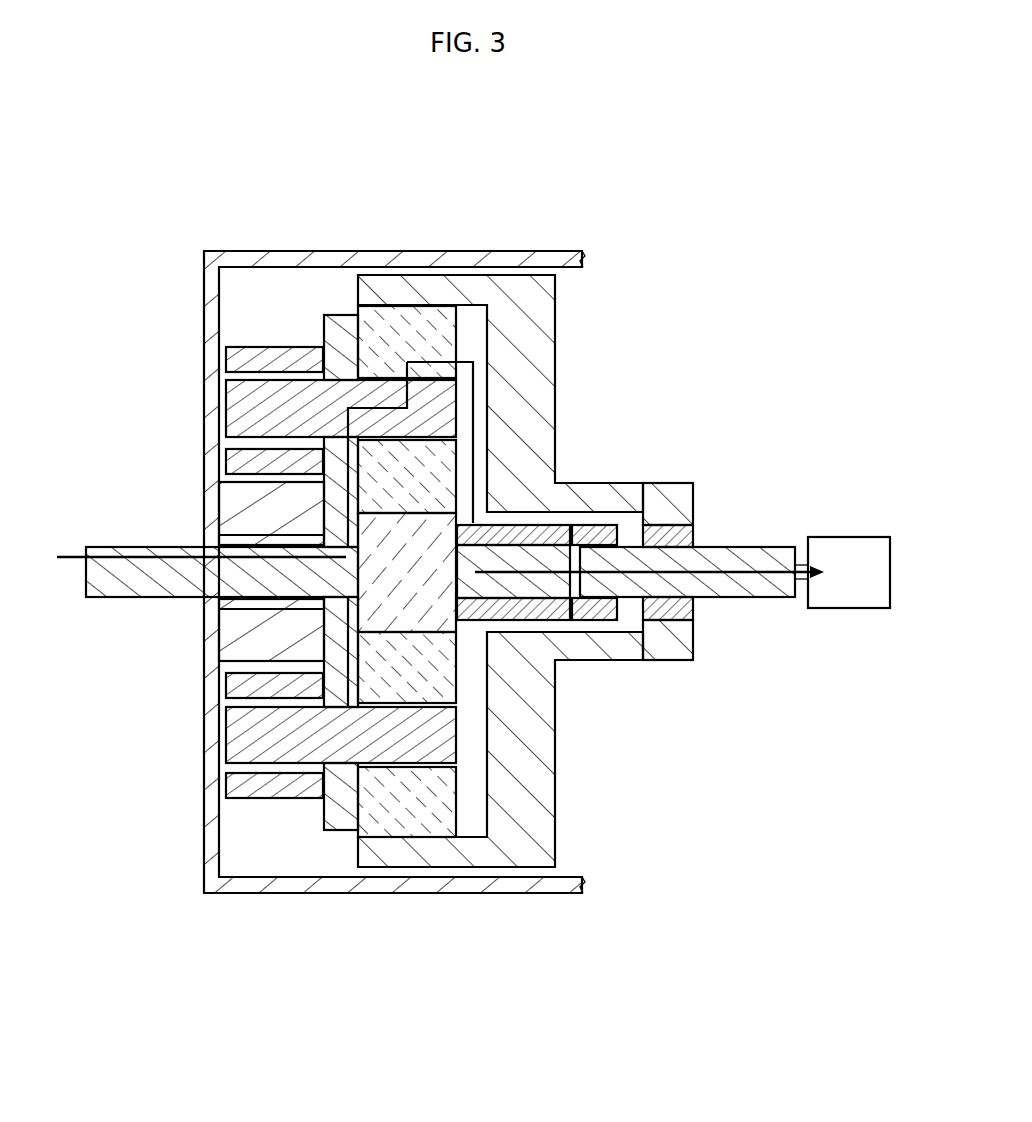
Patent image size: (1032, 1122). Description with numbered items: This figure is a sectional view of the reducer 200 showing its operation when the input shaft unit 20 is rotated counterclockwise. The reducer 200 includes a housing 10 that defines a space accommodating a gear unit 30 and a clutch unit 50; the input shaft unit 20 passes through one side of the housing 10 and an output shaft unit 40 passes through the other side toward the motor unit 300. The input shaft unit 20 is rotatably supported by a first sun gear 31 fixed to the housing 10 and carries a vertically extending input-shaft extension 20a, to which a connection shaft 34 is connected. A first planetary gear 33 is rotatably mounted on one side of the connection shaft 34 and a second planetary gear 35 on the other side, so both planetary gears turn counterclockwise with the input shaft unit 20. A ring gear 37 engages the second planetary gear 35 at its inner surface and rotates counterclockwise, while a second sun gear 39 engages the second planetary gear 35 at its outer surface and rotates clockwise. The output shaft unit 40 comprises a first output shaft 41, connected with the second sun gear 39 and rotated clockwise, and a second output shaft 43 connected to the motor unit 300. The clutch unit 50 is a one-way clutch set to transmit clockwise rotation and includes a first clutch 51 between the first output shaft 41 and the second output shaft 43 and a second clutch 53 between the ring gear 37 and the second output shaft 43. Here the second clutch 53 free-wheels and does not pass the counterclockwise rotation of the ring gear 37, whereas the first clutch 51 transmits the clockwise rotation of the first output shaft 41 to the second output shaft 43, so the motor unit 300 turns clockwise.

The housing 10 is at (288, 250).
The input shaft unit 20 is at (99, 604).
The input-shaft extension 20a is at (333, 683).
The gear unit 30 is at (355, 932).
The first sun gear 31 is at (240, 505).
The first planetary gear 33 is at (233, 358).
The connection shaft 34 is at (233, 405).
The second planetary gear 35 is at (408, 322).
The ring gear 37 is at (535, 320).
The second sun gear 39 is at (383, 607).
The output shaft unit 40 is at (705, 771).
The first output shaft 41 is at (540, 590).
The second output shaft 43 is at (738, 590).
The clutch unit 50 is at (682, 401).
The first clutch 51 is at (596, 527).
The second clutch 53 is at (681, 524).
The reducer 200 is at (742, 153).
The motor unit 300 is at (851, 537).